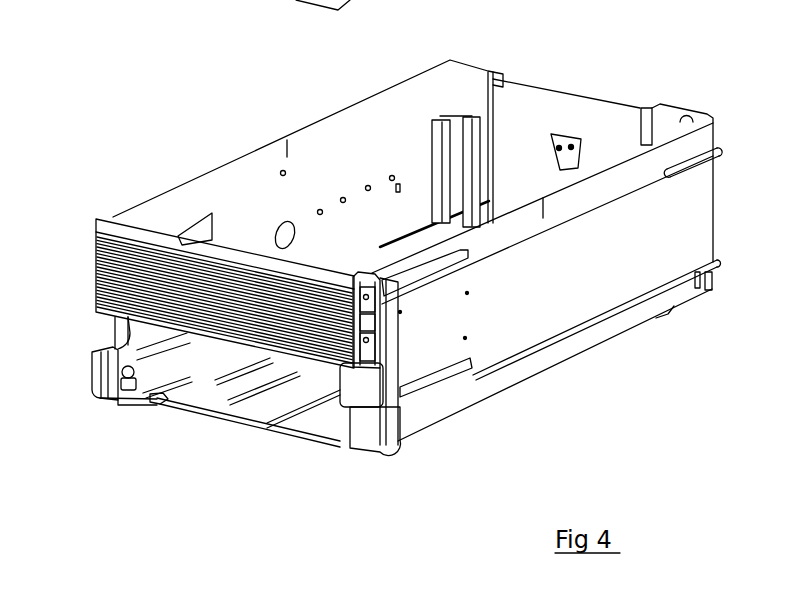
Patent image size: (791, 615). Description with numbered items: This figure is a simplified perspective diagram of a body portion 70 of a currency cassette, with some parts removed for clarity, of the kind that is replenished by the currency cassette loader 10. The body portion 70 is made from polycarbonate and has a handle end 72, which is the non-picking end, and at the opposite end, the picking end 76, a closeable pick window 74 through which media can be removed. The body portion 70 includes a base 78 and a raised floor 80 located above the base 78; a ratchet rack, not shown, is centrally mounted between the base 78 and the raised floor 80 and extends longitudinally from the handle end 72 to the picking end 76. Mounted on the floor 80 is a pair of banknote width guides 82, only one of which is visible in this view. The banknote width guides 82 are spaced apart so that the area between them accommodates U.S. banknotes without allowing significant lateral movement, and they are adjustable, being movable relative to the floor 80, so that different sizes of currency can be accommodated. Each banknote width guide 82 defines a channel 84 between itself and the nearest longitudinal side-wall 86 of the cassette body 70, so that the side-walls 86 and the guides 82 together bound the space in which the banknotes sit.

The currency cassette loader 10 is at (116, 46).
The body portion 70 is at (318, 529).
The handle end 72 is at (635, 58).
The closeable pick window 74 is at (180, 438).
The picking end 76 is at (253, 146).
The base 78 is at (257, 424).
The raised floor 80 is at (157, 399).
The banknote width guide 82 is at (125, 393).
The channel 84 is at (128, 356).
The longitudinal side-wall 86 is at (325, 112).